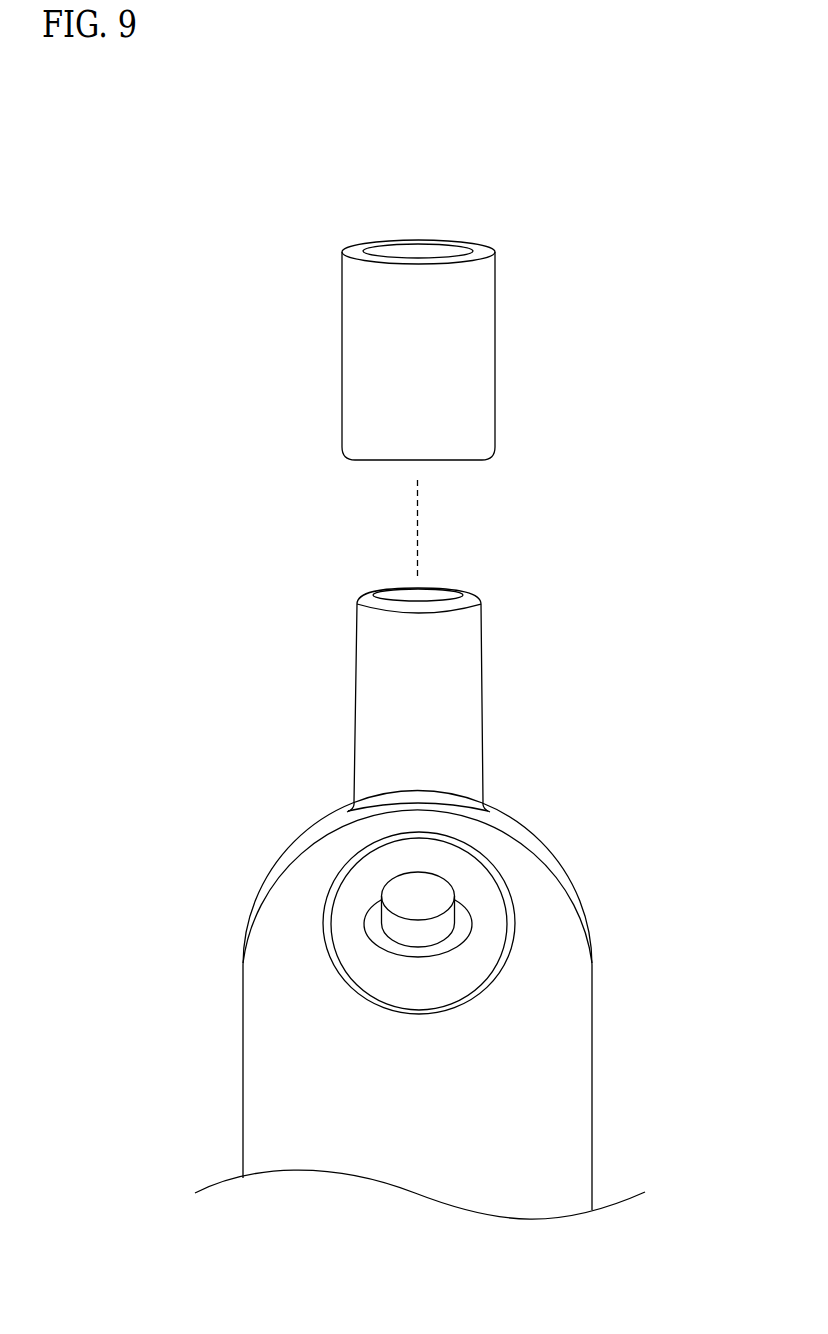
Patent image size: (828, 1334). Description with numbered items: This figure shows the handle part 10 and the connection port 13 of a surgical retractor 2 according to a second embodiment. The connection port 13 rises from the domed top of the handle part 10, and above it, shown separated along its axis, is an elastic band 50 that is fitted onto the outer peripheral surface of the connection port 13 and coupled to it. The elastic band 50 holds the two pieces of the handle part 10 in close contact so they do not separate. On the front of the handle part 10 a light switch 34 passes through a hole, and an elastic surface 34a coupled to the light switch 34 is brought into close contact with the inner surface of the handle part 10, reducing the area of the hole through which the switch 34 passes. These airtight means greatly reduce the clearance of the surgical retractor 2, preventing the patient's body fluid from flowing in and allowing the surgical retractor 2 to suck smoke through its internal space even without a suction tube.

The surgical retractor 2 is at (221, 181).
The handle part 10 is at (547, 1095).
The connection port 13 is at (458, 712).
The light switch 34 is at (430, 897).
The elastic surface 34a is at (463, 925).
The elastic band 50 is at (465, 363).